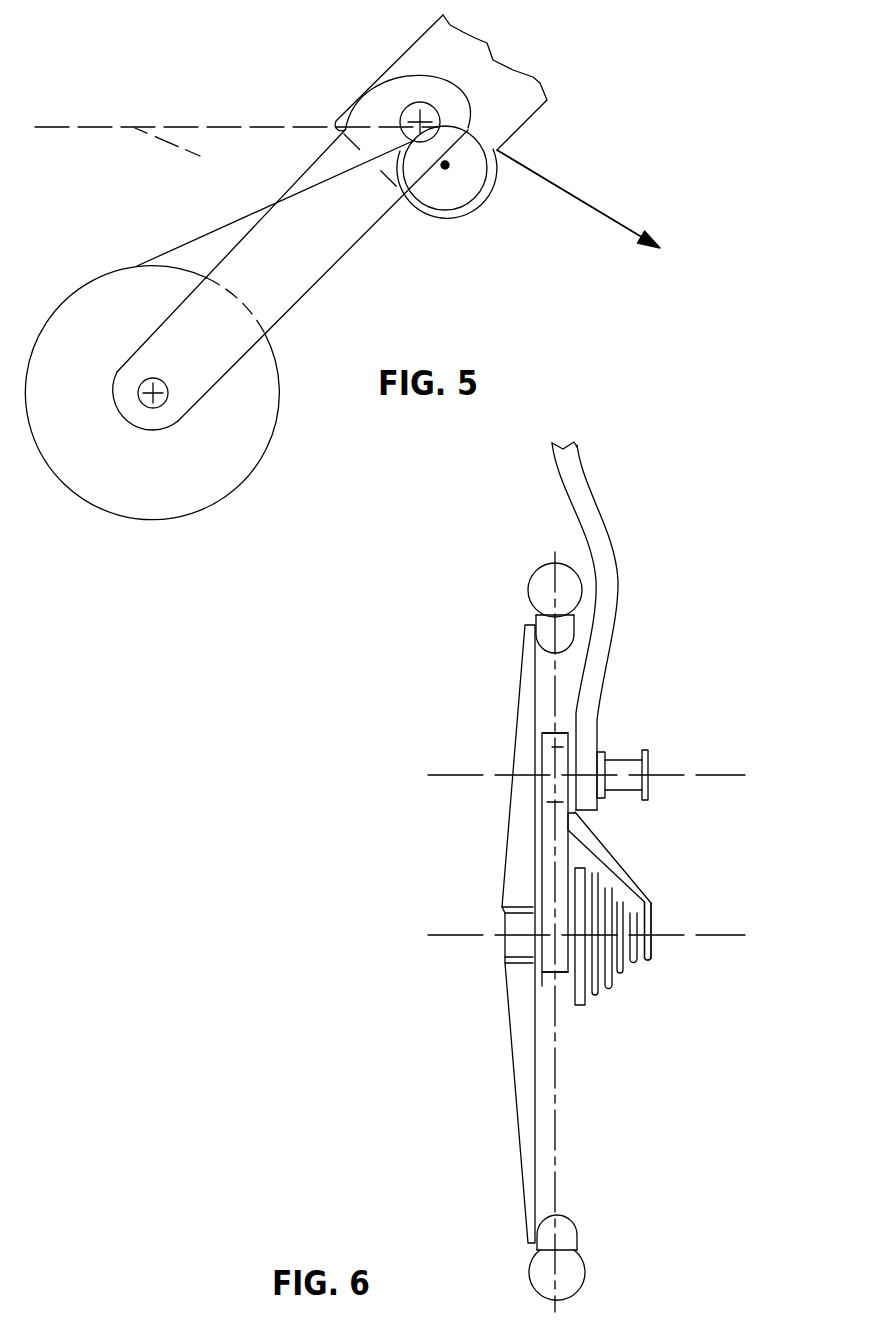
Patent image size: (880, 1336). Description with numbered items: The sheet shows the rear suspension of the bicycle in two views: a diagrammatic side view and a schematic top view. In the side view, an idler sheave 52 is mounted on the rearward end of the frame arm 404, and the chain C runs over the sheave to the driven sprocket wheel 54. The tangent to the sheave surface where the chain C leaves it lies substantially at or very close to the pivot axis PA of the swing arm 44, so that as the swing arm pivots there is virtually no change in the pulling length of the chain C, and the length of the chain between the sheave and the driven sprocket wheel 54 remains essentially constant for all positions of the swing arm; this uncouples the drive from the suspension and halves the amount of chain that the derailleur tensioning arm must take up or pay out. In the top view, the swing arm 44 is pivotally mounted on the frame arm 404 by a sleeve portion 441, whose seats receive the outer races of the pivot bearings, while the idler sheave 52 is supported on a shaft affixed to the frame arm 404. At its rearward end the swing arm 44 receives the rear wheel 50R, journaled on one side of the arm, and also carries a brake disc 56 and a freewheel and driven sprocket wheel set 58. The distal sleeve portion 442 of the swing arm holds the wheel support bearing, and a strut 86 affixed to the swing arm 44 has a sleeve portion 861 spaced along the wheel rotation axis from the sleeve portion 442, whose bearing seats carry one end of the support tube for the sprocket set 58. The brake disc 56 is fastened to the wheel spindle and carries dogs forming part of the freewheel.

In FIG. 5, the frame arm 404 is at (408, 50).
In FIG. 6, the frame arm 404 is at (618, 597).
In FIG. 5, the swing arm 44 is at (307, 172).
In FIG. 6, the swing arm 44 is at (542, 833).
In FIG. 5, the pivot axis PA is at (420, 123).
In FIG. 5, the idler sheave 52 is at (472, 182).
In FIG. 6, the idler sheave 52 is at (617, 755).
In FIG. 5, the driven sprocket wheel 54 is at (92, 278).
In FIG. 5, the chain C is at (563, 188).
In FIG. 6, the sleeve portion 441 is at (552, 723).
In FIG. 6, the distal sleeve portion 442 is at (542, 986).
In FIG. 6, the rear wheel 50R is at (506, 1140).
In FIG. 6, the strut 86 is at (622, 865).
In FIG. 6, the sleeve portion 861 is at (653, 918).
In FIG. 6, the freewheel and driven sprocket wheel set 58 is at (632, 998).
In FIG. 6, the brake disc 56 is at (578, 1005).